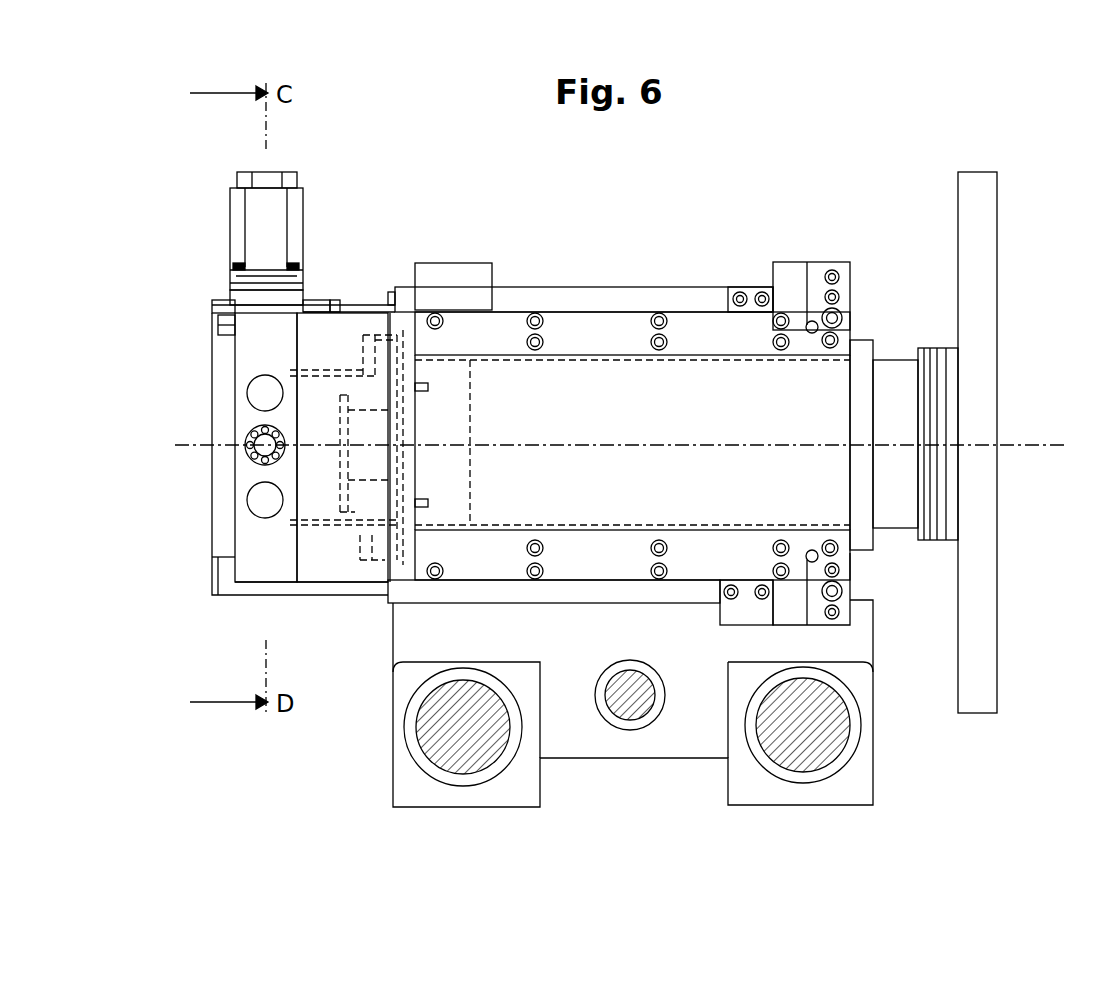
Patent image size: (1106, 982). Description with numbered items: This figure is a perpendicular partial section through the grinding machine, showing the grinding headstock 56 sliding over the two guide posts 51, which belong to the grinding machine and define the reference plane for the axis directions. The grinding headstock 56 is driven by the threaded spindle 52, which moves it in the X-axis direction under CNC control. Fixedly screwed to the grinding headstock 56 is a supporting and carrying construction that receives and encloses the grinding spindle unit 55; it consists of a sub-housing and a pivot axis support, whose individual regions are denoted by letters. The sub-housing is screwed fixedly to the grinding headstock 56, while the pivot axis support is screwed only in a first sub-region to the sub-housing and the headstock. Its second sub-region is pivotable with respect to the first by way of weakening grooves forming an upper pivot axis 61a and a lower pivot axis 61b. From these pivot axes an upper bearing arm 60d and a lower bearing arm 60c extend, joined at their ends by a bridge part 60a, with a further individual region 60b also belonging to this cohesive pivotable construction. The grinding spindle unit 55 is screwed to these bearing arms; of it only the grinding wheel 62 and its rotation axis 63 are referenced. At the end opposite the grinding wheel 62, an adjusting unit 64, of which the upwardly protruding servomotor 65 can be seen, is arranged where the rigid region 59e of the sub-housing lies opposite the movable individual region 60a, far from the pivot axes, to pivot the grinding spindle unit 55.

The guide posts 51 is at (452, 757).
The threaded spindle 52 is at (630, 716).
The grinding spindle unit 55 is at (680, 375).
The grinding headstock 56 is at (848, 641).
The region of the sub-housing 59e is at (218, 306).
The bridge part 60a is at (256, 570).
The individual region of the pivot axis support 60b is at (366, 572).
The lower bearing arm 60c is at (614, 560).
The upper bearing arm 60d is at (566, 326).
The upper pivot axis 61a is at (812, 280).
The lower pivot axis 61b is at (835, 588).
The grinding wheel 62 is at (976, 208).
The rotation axis 63 is at (724, 446).
The adjusting unit 64 is at (220, 226).
The servomotor 65 is at (277, 226).